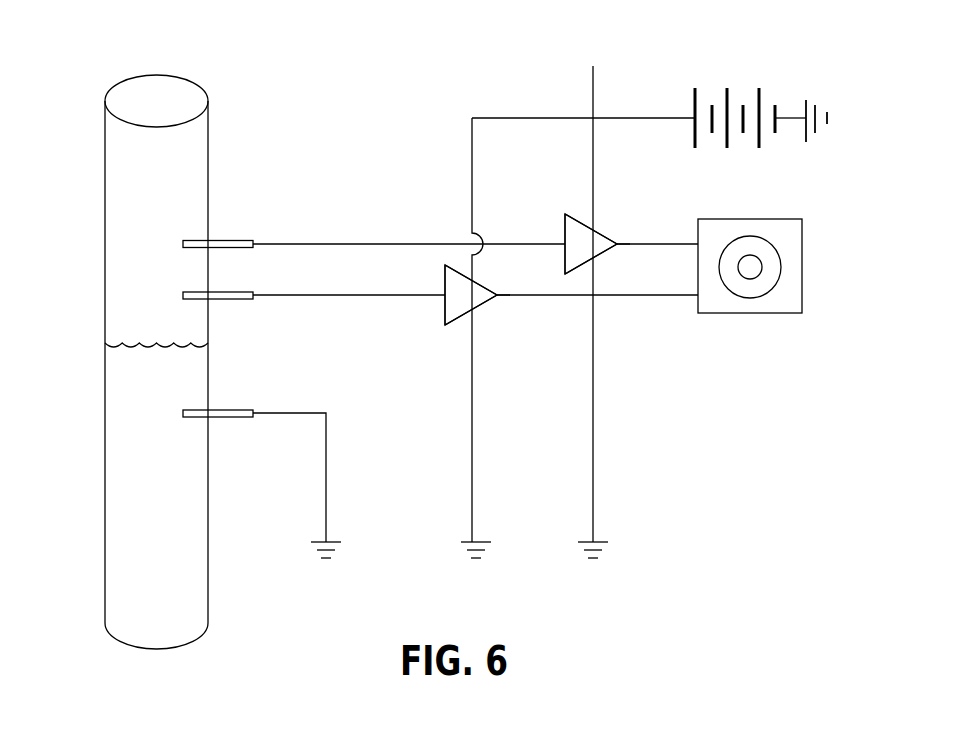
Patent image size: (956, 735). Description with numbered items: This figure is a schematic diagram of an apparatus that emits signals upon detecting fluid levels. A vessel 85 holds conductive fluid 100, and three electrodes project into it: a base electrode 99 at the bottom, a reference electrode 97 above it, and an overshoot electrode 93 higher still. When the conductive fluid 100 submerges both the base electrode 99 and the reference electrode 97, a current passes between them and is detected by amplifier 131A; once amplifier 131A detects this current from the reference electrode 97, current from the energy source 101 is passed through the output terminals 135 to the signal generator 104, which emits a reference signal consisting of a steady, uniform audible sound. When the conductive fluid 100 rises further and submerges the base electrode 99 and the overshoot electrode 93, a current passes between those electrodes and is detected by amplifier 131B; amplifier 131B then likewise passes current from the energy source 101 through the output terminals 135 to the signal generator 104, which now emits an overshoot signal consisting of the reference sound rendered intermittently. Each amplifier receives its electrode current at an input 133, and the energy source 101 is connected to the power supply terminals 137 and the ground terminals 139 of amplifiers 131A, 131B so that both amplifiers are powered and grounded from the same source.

The tank / cylindrical vessel 85 is at (195, 84).
The overshoot electrode 93 is at (233, 239).
The reference electrode 97 is at (237, 300).
The base electrode 99 is at (226, 409).
The conductive fluid 100 is at (143, 391).
The energy source 101 is at (738, 64).
The signal generator 104 is at (802, 247).
The amplifier 131A is at (446, 267).
The amplifier 131B is at (573, 218).
The amplifier input 133 is at (445, 305).
The output terminals 135 is at (497, 297).
The power supply terminals 137 is at (483, 287).
The ground terminals 139 is at (470, 311).